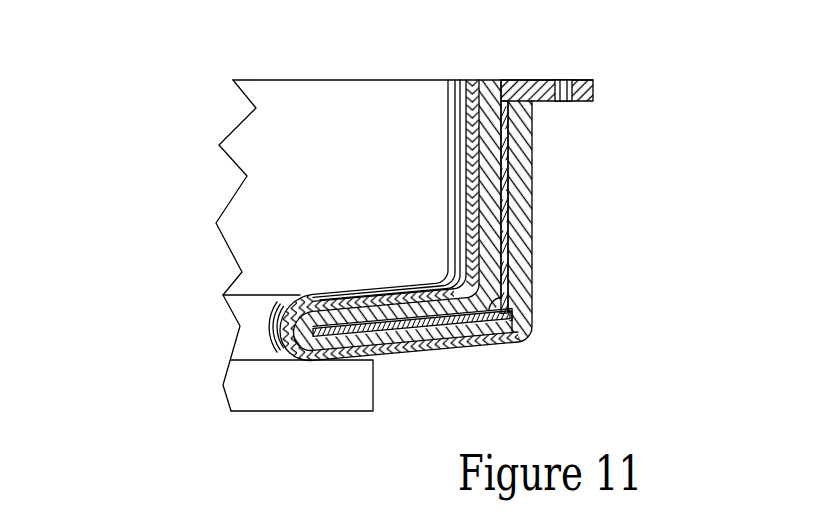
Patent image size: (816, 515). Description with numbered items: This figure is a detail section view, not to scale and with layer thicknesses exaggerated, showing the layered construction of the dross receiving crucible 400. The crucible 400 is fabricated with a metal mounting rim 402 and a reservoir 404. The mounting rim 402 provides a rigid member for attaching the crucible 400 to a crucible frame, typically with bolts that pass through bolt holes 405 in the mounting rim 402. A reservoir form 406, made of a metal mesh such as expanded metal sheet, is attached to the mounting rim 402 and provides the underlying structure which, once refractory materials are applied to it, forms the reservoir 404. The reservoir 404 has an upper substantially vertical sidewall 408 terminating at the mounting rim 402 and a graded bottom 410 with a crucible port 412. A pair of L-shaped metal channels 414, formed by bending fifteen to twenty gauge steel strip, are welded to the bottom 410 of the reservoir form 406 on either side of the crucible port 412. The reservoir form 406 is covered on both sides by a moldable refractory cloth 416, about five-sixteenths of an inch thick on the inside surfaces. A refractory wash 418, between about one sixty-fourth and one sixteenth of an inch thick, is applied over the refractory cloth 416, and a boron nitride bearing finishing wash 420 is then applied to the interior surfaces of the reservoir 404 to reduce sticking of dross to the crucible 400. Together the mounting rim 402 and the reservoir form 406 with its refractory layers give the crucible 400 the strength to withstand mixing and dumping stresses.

The dross receiving crucible 400 is at (202, 100).
The mounting rim 402 is at (599, 56).
The reservoir 404 is at (500, 240).
The bolt holes 405 is at (568, 82).
The reservoir form 406 is at (530, 317).
The upper substantially vertical sidewall 408 is at (507, 242).
The graded bottom 410 is at (455, 322).
The crucible port 412 is at (255, 328).
The L-shaped metal channels 414 is at (255, 379).
The moldable refractory cloth 416 is at (517, 170).
The refractory wash 418 is at (532, 193).
The finishing wash 420 is at (470, 163).